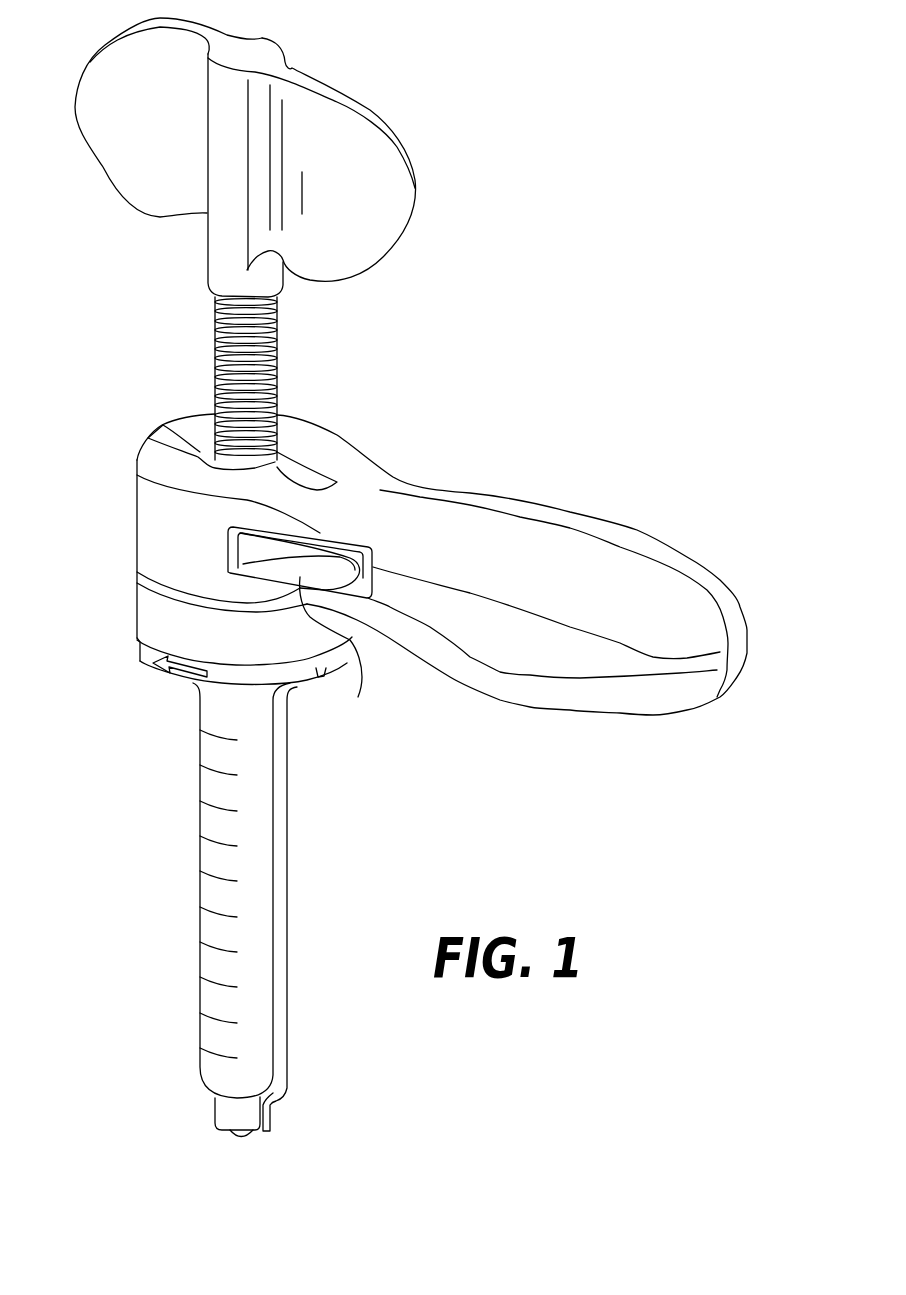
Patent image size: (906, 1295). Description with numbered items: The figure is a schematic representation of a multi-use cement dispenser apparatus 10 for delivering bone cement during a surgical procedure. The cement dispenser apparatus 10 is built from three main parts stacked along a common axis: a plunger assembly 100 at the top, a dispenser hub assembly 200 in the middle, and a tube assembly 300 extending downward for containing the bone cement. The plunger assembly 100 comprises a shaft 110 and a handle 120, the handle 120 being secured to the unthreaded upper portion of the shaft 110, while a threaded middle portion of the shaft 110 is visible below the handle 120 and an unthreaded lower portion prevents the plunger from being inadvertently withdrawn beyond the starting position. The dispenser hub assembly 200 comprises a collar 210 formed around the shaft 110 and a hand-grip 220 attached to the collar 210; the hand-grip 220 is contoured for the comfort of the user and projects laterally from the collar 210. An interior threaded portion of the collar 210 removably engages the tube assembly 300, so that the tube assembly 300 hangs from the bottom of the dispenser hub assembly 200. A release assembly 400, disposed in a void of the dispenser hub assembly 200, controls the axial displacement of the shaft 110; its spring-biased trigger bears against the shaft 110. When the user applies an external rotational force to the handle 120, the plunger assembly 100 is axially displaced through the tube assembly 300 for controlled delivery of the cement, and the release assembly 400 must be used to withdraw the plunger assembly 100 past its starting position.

The cement dispenser apparatus 10 is at (552, 248).
The plunger assembly 100 is at (184, 249).
The shaft 110 is at (265, 348).
The handle 120 is at (347, 102).
The dispenser hub assembly 200 is at (104, 441).
The collar 210 is at (168, 517).
The hand-grip 220 is at (562, 535).
The tube assembly 300 is at (184, 851).
The release assembly 400 is at (343, 627).